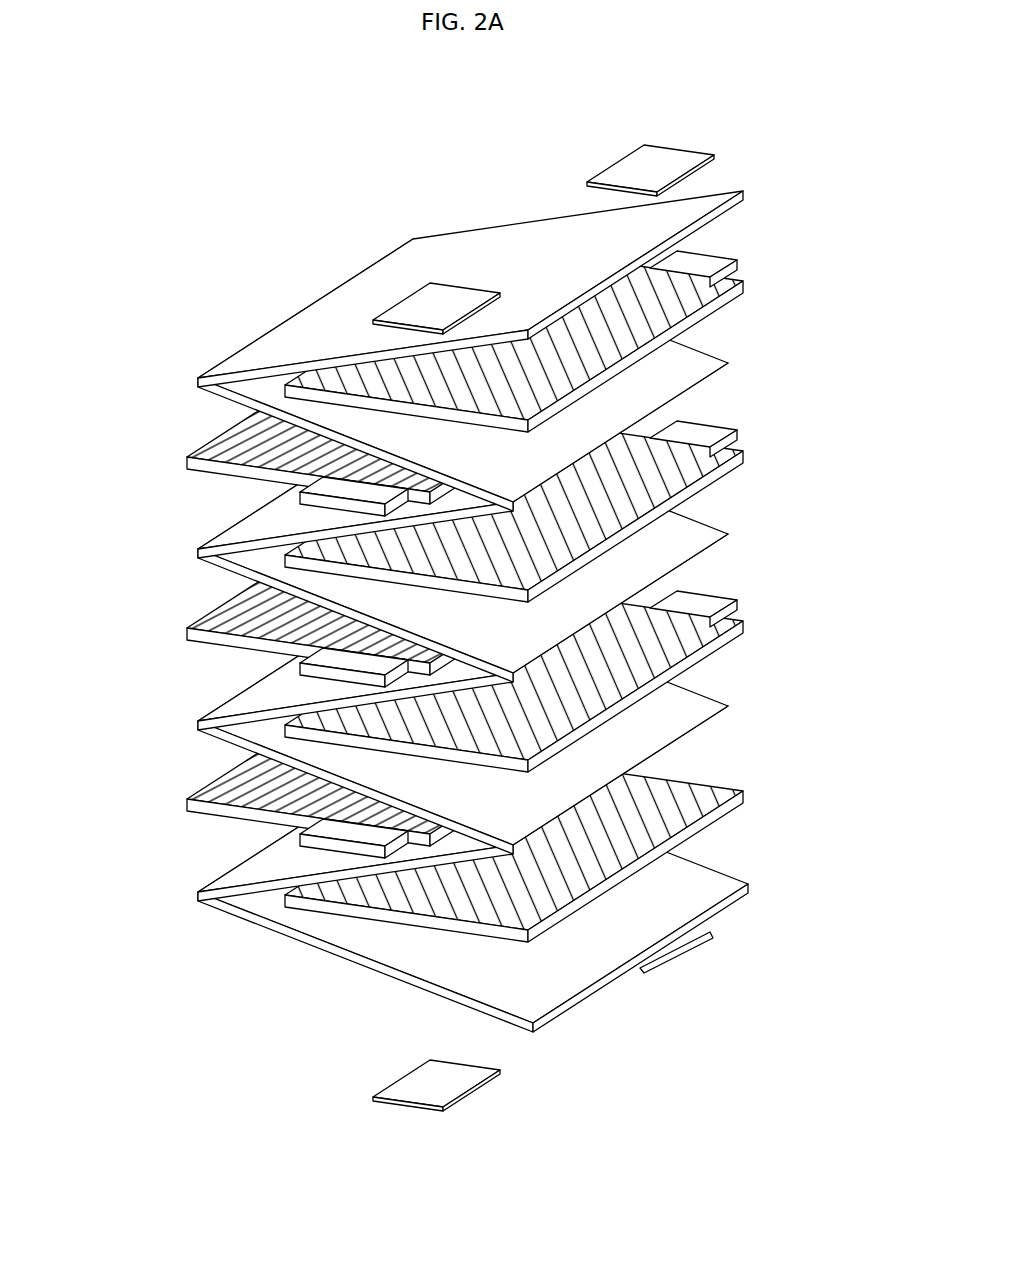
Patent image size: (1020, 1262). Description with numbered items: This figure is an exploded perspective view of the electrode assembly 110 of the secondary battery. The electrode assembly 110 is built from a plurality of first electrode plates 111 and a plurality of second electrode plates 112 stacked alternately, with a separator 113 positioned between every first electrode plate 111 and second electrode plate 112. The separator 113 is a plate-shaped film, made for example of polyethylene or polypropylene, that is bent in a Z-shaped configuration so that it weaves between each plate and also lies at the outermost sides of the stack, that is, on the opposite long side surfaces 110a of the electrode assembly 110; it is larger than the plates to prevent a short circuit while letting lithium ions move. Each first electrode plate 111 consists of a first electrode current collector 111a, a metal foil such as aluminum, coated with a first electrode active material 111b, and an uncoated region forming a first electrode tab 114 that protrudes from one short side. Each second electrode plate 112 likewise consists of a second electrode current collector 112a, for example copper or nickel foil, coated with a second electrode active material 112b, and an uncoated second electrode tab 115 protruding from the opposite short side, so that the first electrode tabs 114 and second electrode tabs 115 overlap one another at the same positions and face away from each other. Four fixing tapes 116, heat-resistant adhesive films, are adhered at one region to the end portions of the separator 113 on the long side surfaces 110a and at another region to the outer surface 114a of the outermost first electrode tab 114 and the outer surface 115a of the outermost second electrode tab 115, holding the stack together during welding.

The electrode assembly 110 is at (465, 595).
The long side surfaces 110a is at (327, 307).
The first electrode plate 111 is at (390, 586).
The first electrode current collector 111a is at (220, 467).
The first electrode active material 111b is at (226, 442).
The second electrode plate 112 is at (469, 590).
The second electrode current collector 112a is at (722, 303).
The second electrode active material 112b is at (718, 283).
The separator 113 is at (469, 635).
The first electrode tab 114 is at (317, 658).
The outer surface of the first electrode tab 114a is at (312, 483).
The second electrode tab 115 is at (727, 432).
The outer surface of the second electrode tab 115a is at (720, 263).
The fixing tape 116 is at (445, 297).